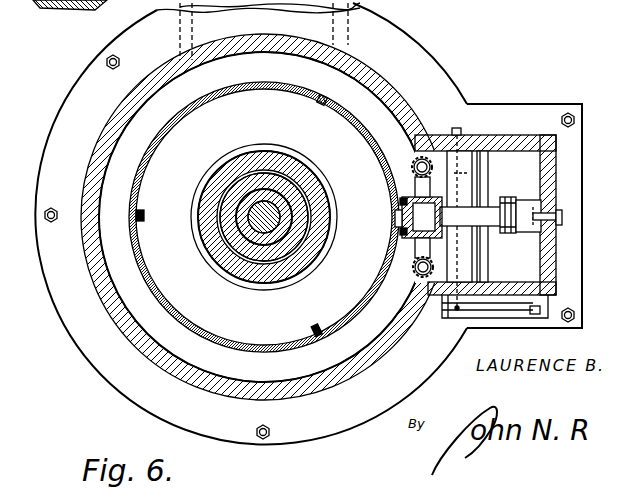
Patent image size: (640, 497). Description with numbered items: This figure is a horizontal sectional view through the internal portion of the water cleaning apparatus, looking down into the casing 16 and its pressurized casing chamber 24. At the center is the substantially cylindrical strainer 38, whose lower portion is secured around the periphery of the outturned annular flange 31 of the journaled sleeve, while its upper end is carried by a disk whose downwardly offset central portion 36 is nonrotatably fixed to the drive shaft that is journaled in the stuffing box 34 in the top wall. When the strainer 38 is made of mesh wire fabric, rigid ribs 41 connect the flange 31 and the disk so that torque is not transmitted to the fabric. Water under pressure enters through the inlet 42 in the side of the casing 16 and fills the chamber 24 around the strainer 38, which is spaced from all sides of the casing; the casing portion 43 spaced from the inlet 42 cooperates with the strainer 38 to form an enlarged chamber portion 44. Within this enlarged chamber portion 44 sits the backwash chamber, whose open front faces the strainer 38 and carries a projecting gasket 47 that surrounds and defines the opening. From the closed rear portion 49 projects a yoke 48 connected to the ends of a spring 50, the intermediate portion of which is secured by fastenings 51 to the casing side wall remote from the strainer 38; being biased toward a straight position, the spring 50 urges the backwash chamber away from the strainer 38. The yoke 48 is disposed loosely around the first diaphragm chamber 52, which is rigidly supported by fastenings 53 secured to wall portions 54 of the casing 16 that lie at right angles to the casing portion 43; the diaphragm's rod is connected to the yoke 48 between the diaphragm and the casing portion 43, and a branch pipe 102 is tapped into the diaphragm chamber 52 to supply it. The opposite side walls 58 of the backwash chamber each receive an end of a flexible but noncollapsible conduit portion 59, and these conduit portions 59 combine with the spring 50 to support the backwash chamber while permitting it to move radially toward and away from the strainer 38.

The casing 16 is at (134, 352).
The casing chamber 24 is at (228, 378).
The outturned annular flange 31 is at (250, 219).
The stuffing box 34 is at (237, 197).
The downwardly offset central portion 36 is at (248, 160).
The strainer 38 is at (157, 292).
The rigid ribs 41 is at (145, 215).
The inlet 42 is at (350, 32).
The casing portion 43 is at (570, 251).
The enlarged chamber portion 44 is at (533, 163).
The gasket 47 is at (398, 220).
The yoke 48 is at (500, 234).
The closed rear portion 49 is at (452, 214).
The spring 50 is at (523, 200).
The fastenings 51 is at (562, 216).
The first diaphragm chamber 52 is at (472, 191).
The fastenings 53 is at (460, 119).
The wall portions 54 is at (512, 126).
The side walls 58 is at (413, 195).
The flexible conduit portions 59 is at (417, 150).
The branch pipe 102 is at (455, 313).